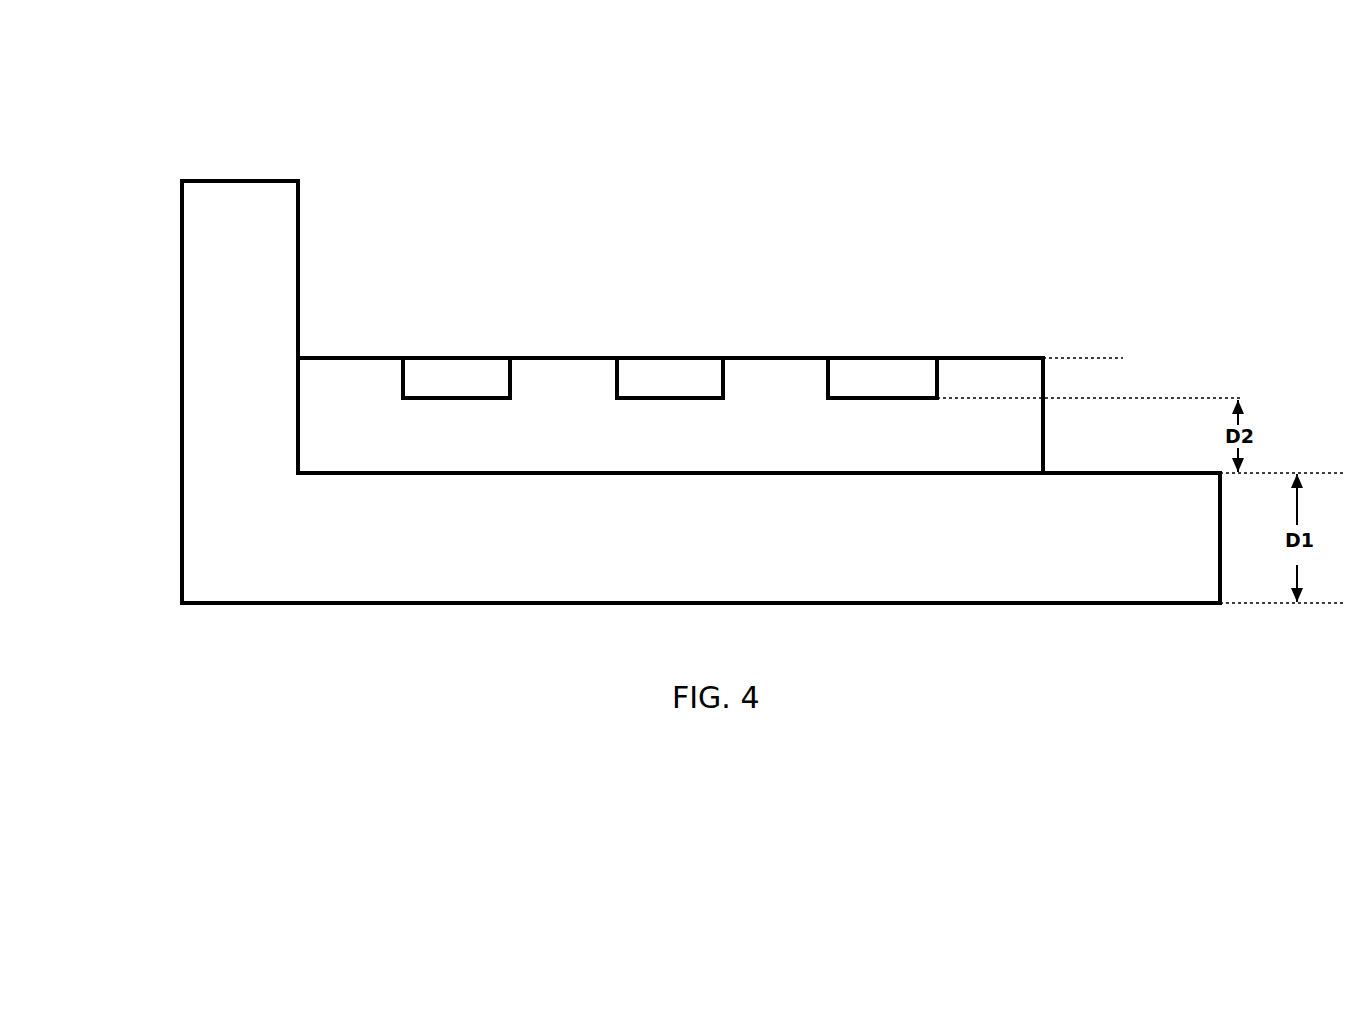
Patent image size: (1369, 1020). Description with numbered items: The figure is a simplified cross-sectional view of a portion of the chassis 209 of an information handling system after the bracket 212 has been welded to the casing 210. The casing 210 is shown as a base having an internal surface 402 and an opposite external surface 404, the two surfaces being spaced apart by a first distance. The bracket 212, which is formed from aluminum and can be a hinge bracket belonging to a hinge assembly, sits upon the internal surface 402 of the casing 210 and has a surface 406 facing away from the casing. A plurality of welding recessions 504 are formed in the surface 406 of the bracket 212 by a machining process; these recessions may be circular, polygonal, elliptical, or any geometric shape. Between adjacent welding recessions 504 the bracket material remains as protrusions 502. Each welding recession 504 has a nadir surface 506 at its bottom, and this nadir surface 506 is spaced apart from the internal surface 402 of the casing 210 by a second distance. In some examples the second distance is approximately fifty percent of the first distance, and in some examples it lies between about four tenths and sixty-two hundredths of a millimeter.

The chassis 209 is at (1243, 72).
The casing 210 is at (180, 441).
The bracket 212 is at (358, 350).
The internal surface 402 is at (1092, 472).
The external surface 404 is at (1052, 605).
The surface 406 is at (1172, 371).
The protrusions 502 is at (541, 357).
The welding recessions 504 is at (470, 342).
The nadir surface 506 is at (418, 397).